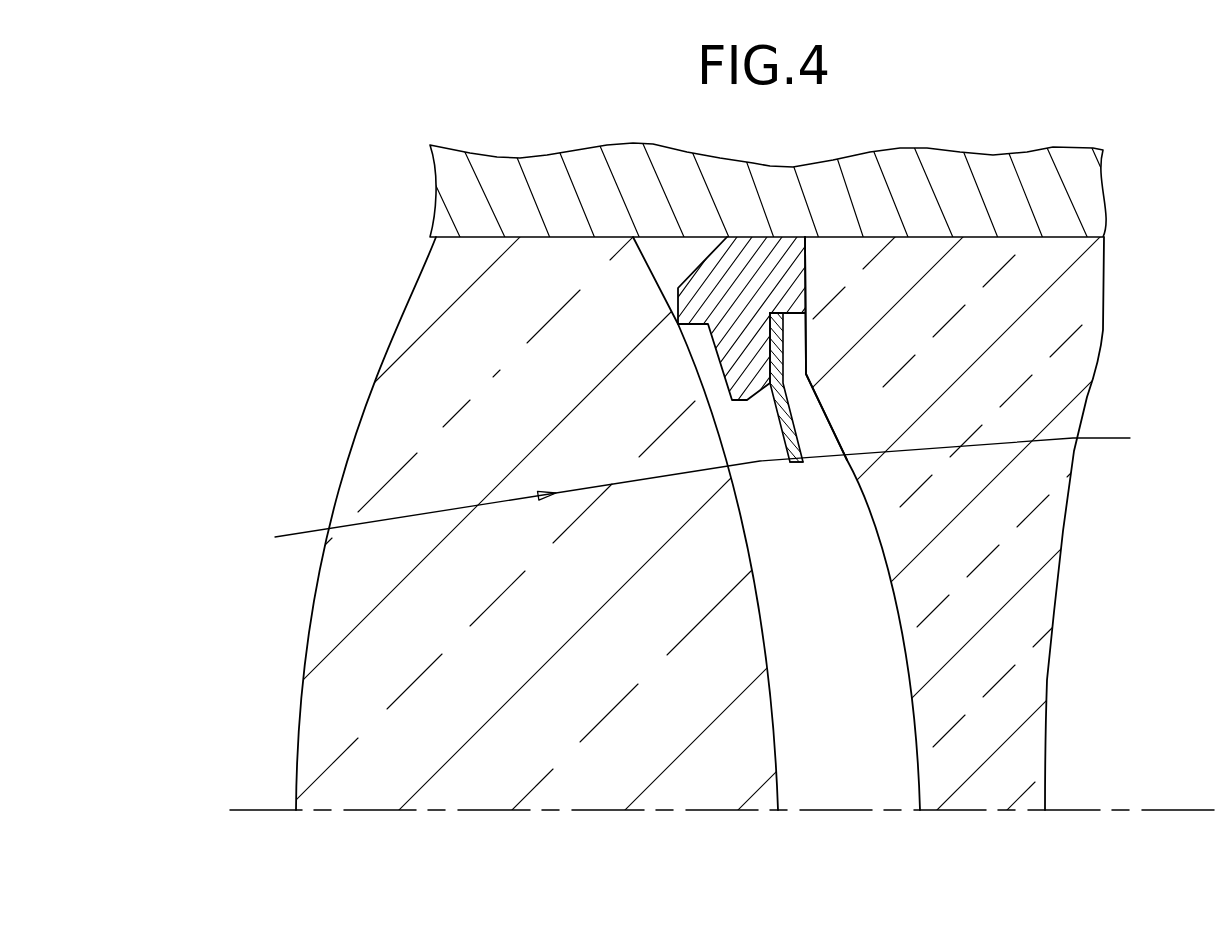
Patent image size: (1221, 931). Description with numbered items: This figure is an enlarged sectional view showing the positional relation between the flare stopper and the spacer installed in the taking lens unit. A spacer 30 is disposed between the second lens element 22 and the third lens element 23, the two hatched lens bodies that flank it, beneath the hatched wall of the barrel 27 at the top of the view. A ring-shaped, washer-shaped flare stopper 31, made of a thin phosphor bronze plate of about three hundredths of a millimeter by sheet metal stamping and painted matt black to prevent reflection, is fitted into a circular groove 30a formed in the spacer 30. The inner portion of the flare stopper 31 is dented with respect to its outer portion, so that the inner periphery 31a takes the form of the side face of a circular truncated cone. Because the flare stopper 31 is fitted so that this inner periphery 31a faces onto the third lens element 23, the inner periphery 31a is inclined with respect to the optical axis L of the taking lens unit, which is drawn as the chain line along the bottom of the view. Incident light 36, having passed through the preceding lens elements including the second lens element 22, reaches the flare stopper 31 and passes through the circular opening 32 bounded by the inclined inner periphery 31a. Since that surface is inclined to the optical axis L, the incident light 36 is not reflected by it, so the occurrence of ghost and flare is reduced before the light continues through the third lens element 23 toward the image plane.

The second lens element 22 is at (423, 382).
The third lens element 23 is at (1030, 678).
The outer wall 27 is at (1084, 192).
The spacer 30 is at (692, 262).
The circular groove 30a is at (800, 316).
The flare stopper 31 is at (806, 423).
The inner periphery 31a is at (799, 464).
The circular opening 32 is at (816, 474).
The incident light 36 is at (294, 534).
The optical axis L is at (265, 810).